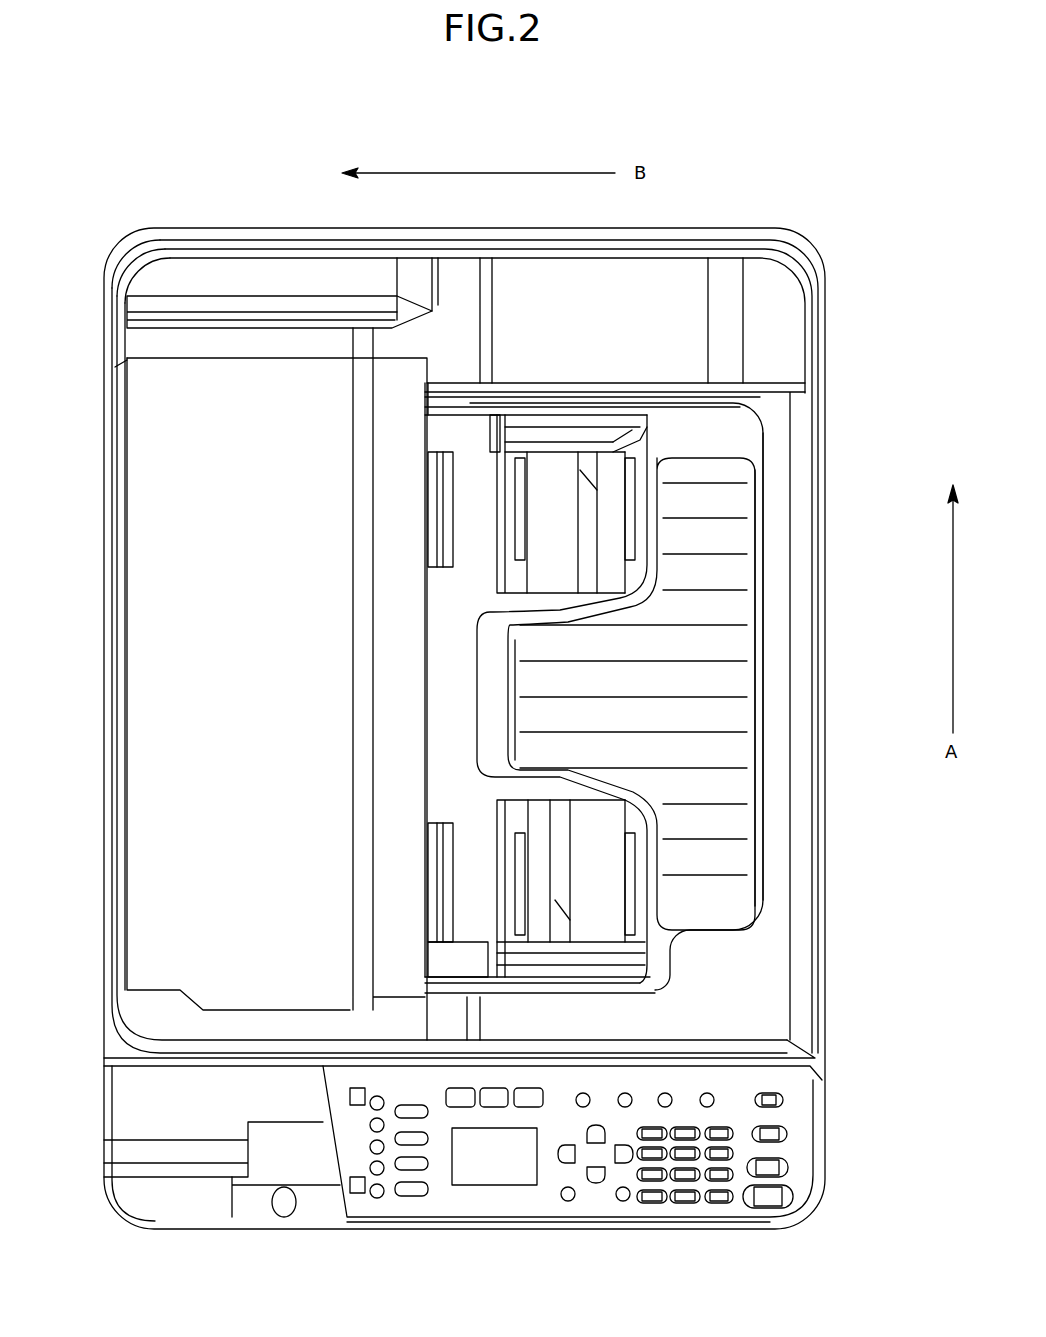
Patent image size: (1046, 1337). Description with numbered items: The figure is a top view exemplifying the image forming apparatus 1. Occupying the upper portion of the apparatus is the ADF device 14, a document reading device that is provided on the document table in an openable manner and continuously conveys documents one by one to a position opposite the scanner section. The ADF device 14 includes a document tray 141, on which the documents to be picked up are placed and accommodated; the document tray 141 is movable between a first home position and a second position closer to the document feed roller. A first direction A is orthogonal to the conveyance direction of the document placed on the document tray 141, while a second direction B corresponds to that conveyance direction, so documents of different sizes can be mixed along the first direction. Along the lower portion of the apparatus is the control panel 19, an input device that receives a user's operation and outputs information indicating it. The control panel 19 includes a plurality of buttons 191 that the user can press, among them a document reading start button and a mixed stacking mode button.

The image forming apparatus 1 is at (773, 181).
The ADF device 14 is at (148, 680).
The document tray 141 is at (747, 569).
The control panel 19 is at (568, 1182).
The buttons 191 is at (650, 1205).